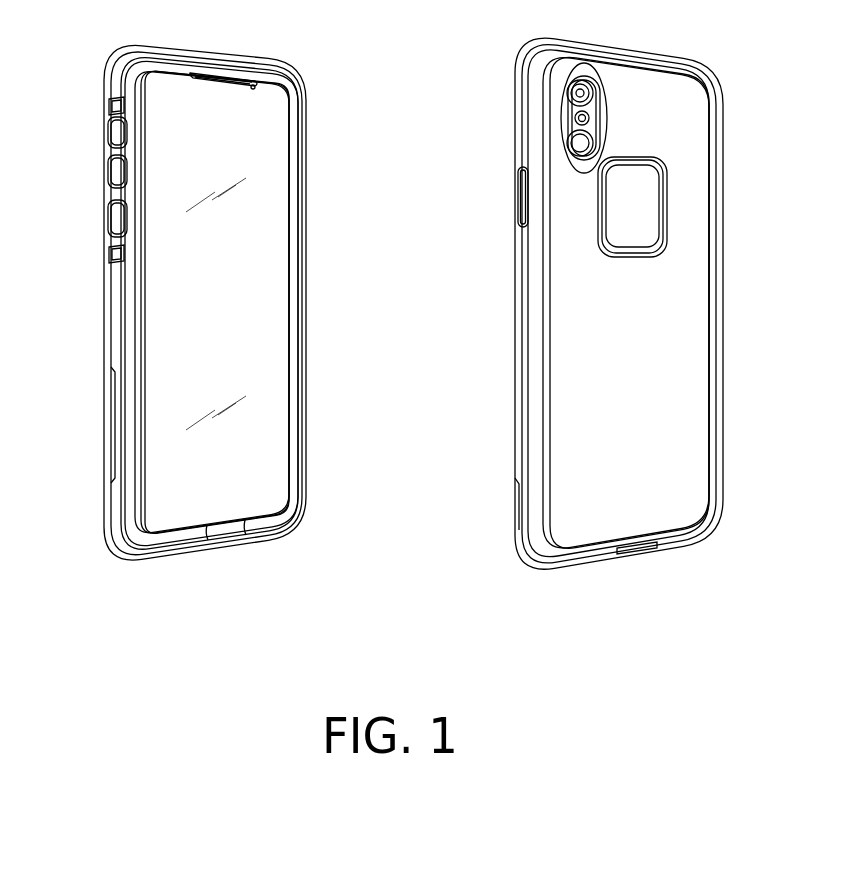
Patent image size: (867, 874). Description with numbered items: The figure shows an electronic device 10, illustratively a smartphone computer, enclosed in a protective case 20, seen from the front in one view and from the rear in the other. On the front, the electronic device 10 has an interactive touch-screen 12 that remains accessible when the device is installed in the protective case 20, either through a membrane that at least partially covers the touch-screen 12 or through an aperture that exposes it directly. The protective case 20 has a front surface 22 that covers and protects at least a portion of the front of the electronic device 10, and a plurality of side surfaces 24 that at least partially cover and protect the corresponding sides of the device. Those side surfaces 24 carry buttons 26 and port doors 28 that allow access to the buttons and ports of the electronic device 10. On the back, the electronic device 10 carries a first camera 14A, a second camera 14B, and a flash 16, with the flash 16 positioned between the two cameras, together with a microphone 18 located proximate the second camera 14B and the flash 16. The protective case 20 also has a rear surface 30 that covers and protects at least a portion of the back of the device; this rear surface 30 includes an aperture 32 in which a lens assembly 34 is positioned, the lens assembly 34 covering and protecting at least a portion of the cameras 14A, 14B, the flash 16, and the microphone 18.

In FIG. 1A, the electronic device 10 is at (268, 101).
In FIG. 1B, the electronic device 10 is at (619, 303).
In FIG. 1A, the interactive touch-screen 12 is at (271, 331).
In FIG. 1B, the first camera 14A is at (578, 94).
In FIG. 1B, the second camera 14B is at (573, 145).
In FIG. 1B, the flash 16 is at (580, 118).
In FIG. 1B, the microphone 18 is at (606, 97).
In FIG. 1A, the protective case 20 is at (303, 140).
In FIG. 1B, the protective case 20 is at (696, 91).
In FIG. 1A, the front surface 22 is at (299, 396).
In FIG. 1B, the front surface 22 is at (618, 303).
In FIG. 1A, the side surfaces 24 is at (213, 49).
In FIG. 1B, the side surfaces 24 is at (660, 50).
In FIG. 1A, the buttons 26 is at (109, 170).
In FIG. 1B, the buttons 26 is at (520, 207).
In FIG. 1A, the port doors 28 is at (219, 545).
In FIG. 1B, the port doors 28 is at (634, 550).
In FIG. 1B, the rear surface 30 is at (666, 255).
In FIG. 1B, the aperture 32 is at (585, 130).
In FIG. 1B, the lens assembly 34 is at (577, 136).